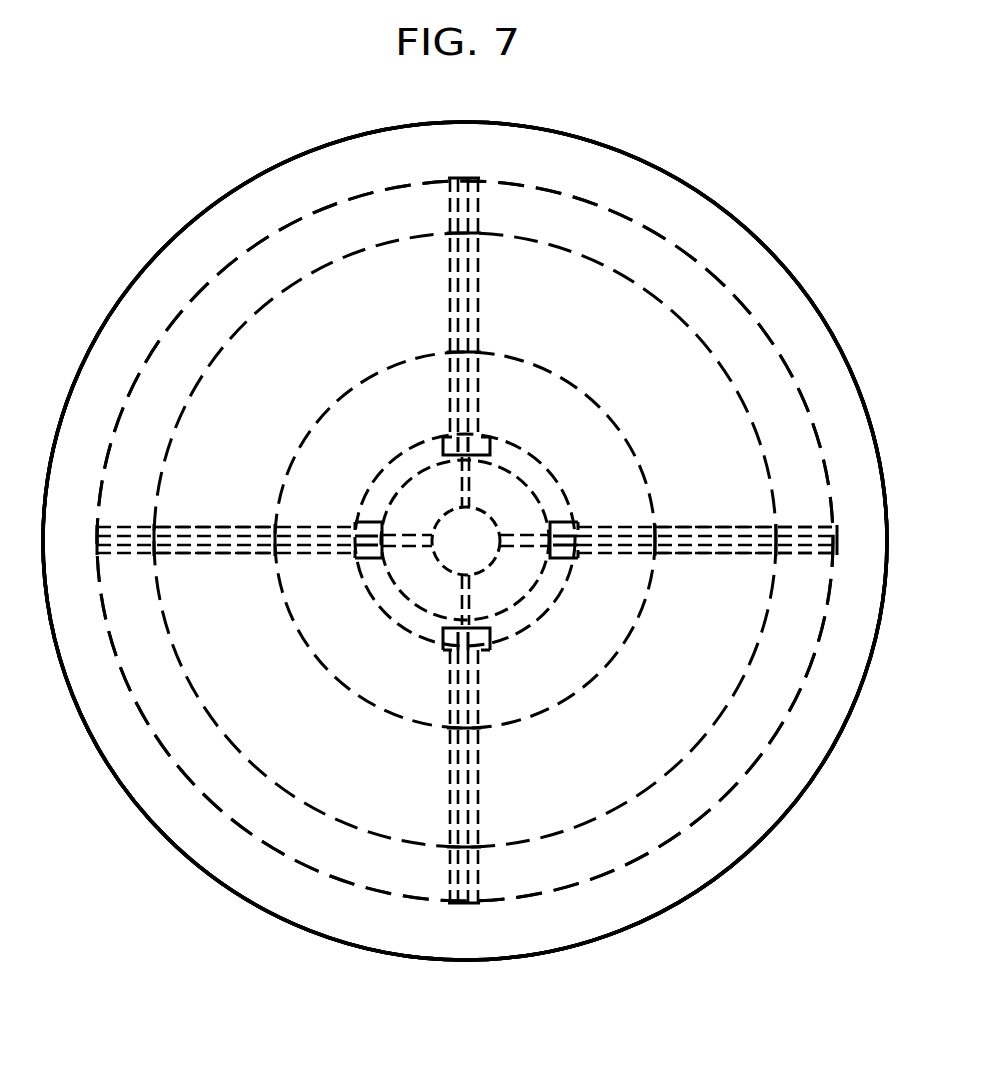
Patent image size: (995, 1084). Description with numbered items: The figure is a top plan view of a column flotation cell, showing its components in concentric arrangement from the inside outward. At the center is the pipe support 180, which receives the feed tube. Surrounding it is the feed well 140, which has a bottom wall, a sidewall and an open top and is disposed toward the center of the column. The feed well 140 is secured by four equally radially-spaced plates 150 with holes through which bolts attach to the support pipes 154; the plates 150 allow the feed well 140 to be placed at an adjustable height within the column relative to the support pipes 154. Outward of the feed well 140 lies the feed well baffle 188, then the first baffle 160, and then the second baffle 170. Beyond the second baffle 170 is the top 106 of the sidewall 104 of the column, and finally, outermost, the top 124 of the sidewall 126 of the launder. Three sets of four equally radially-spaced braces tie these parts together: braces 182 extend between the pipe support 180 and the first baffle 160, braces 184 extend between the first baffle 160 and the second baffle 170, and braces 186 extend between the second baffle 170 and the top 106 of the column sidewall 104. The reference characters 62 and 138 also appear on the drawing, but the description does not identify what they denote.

The substrate holder 62 is at (784, 124).
The sidewall 104 is at (297, 858).
The top of the sidewall 106 is at (158, 342).
The top of the sidewall of the launder 124 is at (97, 327).
The sidewall of the launder 126 is at (164, 845).
The peripheral region 138 is at (786, 298).
The feed well 140 is at (401, 484).
The plates 150 is at (447, 438).
The support pipes 154 is at (481, 299).
The first baffle 160 is at (335, 684).
The second baffle 170 is at (195, 681).
The pipe support 180 is at (466, 541).
The braces 182 is at (316, 526).
The braces 184 is at (199, 556).
The braces 186 is at (806, 526).
The feed well baffle 188 is at (520, 641).